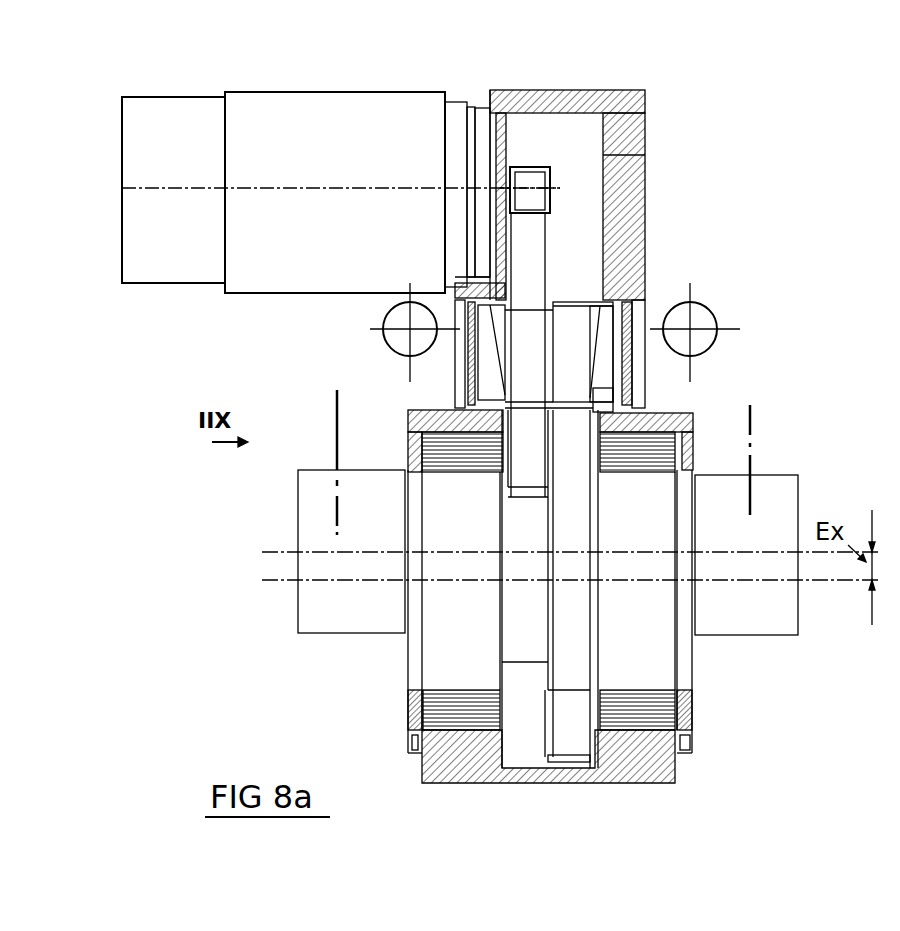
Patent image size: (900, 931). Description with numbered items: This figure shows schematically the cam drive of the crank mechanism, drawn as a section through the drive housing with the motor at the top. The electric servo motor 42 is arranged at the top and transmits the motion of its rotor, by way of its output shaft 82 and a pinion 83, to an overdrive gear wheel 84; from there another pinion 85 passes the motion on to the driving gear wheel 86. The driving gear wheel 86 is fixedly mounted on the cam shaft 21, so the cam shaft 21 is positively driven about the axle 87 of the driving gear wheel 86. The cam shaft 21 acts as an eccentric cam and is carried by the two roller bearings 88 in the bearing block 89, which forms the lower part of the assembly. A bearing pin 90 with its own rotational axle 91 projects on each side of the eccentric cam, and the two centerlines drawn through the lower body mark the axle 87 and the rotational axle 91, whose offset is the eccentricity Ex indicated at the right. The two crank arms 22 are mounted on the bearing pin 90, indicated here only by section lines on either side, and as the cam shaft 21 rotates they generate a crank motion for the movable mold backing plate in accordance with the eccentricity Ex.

The servo motor 42 is at (328, 100).
The output shaft 82 is at (556, 192).
The pinion 83 is at (527, 167).
The overdrive gear wheel 84 is at (547, 355).
The pinion 85 is at (555, 310).
The bearing pin 90 is at (348, 632).
The cam shaft 21 is at (803, 477).
The crank arms 22 is at (333, 422).
The rotational axle 91 is at (546, 552).
The axle 87 is at (546, 582).
The roller bearings 88 is at (692, 710).
The bearing block 89 is at (675, 782).
The driving gear wheel 86 is at (578, 757).